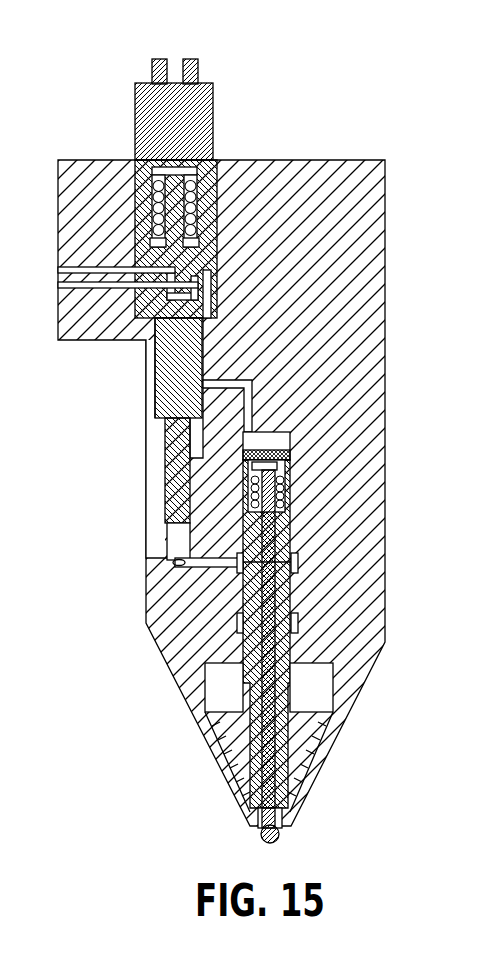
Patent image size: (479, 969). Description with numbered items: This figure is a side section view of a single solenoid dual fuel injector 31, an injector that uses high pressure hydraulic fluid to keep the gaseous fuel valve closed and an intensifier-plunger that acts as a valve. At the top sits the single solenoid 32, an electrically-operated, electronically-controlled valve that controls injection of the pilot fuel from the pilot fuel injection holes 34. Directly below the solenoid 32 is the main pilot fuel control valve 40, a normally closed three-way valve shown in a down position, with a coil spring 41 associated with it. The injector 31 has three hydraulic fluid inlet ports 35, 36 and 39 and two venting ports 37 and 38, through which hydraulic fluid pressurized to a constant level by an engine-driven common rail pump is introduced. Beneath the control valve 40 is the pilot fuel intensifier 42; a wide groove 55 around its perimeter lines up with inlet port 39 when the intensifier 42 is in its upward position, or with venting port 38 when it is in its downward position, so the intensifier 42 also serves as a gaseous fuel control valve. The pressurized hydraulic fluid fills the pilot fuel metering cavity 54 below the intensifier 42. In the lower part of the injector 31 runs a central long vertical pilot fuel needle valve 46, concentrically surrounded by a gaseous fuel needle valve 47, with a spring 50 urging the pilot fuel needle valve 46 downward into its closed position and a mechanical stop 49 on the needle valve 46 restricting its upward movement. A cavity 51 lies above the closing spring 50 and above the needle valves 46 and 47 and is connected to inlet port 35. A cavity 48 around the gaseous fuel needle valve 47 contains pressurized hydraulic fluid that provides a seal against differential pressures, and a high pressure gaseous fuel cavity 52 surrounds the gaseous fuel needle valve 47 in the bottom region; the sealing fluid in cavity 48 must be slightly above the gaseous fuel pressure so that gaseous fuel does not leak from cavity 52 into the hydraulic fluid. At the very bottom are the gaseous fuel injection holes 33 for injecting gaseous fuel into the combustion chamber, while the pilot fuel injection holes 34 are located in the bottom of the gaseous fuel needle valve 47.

The single solenoid dual fuel injector 31 is at (385, 200).
The solenoid 32 is at (197, 108).
The gaseous fuel injection holes 33 is at (289, 818).
The pilot fuel injection holes 34 is at (281, 836).
The hydraulic fluid inlet port 35 is at (5, 426).
The hydraulic fluid inlet port 36 is at (62, 272).
The venting port 37 is at (62, 288).
The venting port 38 is at (150, 408).
The hydraulic fluid inlet port 39 is at (146, 348).
The main pilot fuel control valve 40 is at (157, 182).
The coil spring 41 is at (152, 190).
The pilot fuel intensifier 42 is at (180, 420).
The pilot fuel needle valve 46 is at (266, 600).
The gaseous fuel needle valve 47 is at (248, 676).
The cavity 48 is at (296, 623).
The mechanical stop 49 is at (283, 498).
The spring 50 is at (283, 478).
The cavity 51 is at (283, 445).
The high pressure gaseous fuel cavity 52 is at (323, 697).
The pilot fuel metering cavity 54 is at (174, 536).
The wide groove 55 is at (147, 377).